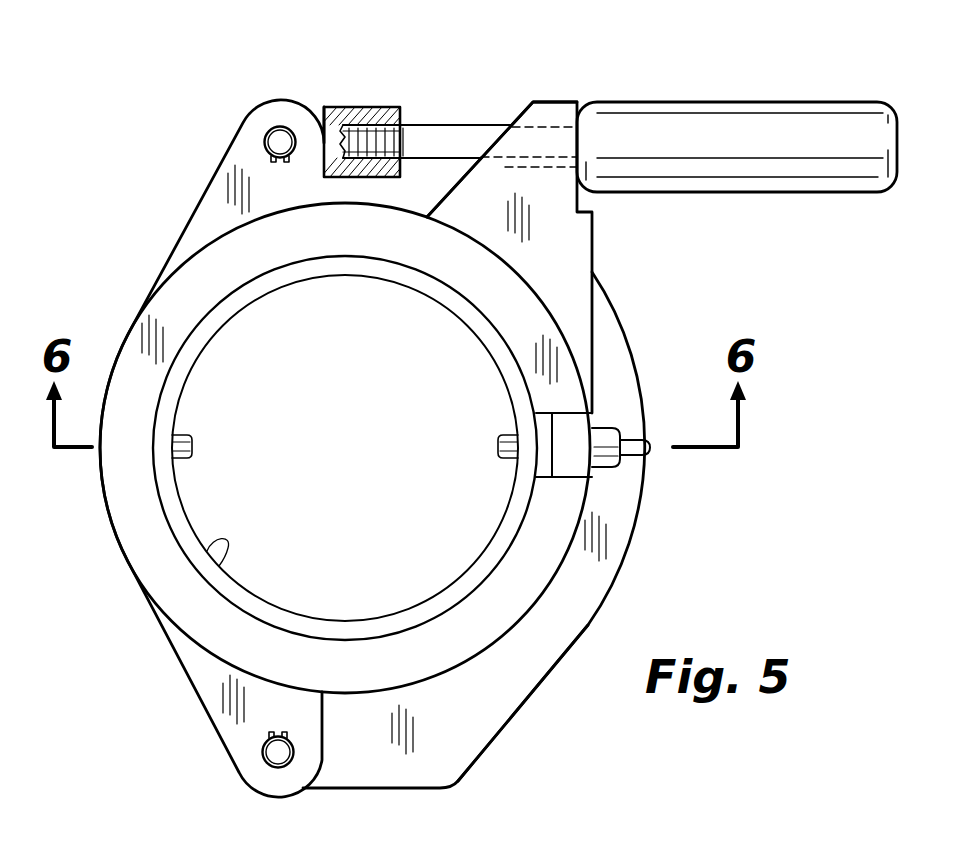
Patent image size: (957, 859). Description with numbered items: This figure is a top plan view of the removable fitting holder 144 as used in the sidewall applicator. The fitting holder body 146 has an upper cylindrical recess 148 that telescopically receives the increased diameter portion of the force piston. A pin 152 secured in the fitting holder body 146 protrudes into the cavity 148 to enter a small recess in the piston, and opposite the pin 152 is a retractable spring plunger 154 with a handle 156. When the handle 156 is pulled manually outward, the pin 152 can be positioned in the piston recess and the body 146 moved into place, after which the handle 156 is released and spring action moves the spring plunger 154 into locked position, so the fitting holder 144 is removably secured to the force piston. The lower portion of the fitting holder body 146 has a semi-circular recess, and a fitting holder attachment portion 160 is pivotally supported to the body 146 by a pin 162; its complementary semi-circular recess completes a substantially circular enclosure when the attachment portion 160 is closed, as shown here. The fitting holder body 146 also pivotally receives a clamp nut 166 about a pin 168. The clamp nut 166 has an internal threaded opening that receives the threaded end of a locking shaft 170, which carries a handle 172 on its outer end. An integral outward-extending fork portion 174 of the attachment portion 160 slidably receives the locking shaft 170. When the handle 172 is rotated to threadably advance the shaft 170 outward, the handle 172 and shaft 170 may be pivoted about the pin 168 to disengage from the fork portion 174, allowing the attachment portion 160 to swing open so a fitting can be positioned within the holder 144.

The fitting holder 144 is at (703, 274).
The fitting holder body 146 is at (138, 522).
The upper cylindrical recess 148 is at (207, 551).
The pin 152 is at (185, 440).
The retractable spring plunger 154 is at (510, 447).
The handle 156 is at (647, 453).
The fitting holder attachment portion 160 is at (580, 593).
The pin 162 is at (275, 750).
The clamp nut 166 is at (335, 113).
The pin 168 is at (279, 140).
The locking shaft 170 is at (450, 135).
The handle 172 is at (772, 142).
The fork portion 174 is at (550, 113).